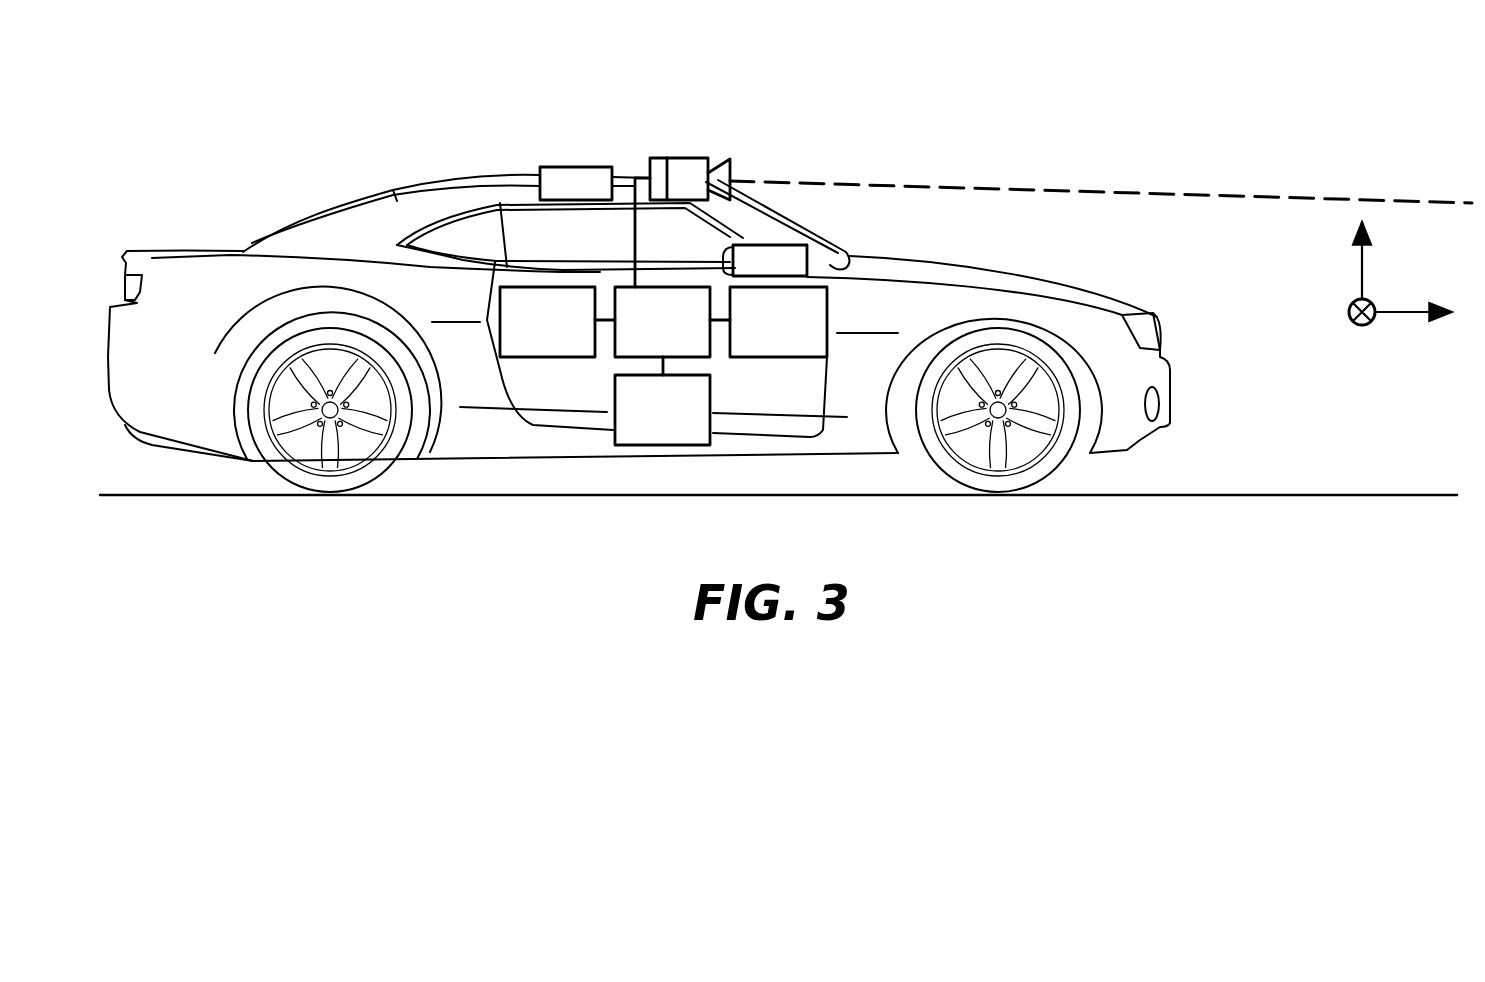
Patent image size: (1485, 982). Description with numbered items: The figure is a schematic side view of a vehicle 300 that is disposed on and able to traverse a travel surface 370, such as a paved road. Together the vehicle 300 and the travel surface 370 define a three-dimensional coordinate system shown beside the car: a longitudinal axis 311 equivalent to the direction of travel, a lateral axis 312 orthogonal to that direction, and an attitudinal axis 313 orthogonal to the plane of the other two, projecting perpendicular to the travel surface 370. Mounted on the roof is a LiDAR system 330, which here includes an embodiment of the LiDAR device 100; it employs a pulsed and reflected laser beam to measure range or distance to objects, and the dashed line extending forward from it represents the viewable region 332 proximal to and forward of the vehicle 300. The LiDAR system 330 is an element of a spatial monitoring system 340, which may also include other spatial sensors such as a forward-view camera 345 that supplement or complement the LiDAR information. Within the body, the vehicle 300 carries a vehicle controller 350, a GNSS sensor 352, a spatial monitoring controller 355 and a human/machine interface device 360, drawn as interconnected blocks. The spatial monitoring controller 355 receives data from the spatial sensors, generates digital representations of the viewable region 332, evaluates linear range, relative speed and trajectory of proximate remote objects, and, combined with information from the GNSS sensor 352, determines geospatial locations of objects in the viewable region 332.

The LiDAR device 100 is at (721, 150).
The vehicle 300 is at (1054, 260).
The longitudinal axis 311 is at (1420, 334).
The lateral axis 312 is at (1358, 329).
The attitudinal axis 313 is at (1337, 256).
The LiDAR system 330 is at (675, 150).
The viewable region 332 is at (922, 183).
The spatial monitoring system 340 is at (648, 172).
The forward-view camera 345 is at (810, 262).
The vehicle controller 350 is at (557, 322).
The GNSS sensor 352 is at (540, 170).
The spatial monitoring controller 355 is at (672, 267).
The human/machine interface device 360 is at (778, 322).
The travel surface 370 is at (1250, 493).